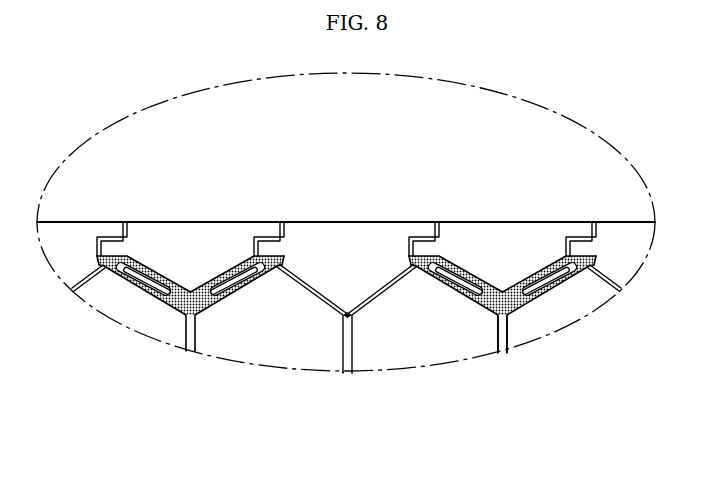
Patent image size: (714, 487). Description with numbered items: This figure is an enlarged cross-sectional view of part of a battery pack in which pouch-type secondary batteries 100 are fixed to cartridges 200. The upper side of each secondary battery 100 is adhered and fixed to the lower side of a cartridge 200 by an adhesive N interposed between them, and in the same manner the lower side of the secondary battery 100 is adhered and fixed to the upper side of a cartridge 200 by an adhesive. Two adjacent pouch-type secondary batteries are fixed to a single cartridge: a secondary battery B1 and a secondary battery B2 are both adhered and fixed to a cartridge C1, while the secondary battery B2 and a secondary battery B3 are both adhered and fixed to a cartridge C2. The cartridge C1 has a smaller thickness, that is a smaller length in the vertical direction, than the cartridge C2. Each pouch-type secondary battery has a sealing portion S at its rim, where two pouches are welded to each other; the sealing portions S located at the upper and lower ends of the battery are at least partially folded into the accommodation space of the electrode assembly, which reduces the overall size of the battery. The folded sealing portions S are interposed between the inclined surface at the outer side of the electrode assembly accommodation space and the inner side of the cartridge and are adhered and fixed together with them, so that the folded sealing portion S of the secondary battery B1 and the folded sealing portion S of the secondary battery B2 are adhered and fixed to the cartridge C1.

The cartridge 200 is at (458, 182).
The cartridge C2 is at (362, 232).
The cartridge C1 is at (460, 232).
The pouch-type secondary battery 100 is at (533, 410).
The secondary battery B3 is at (299, 353).
The secondary battery B2 is at (429, 353).
The secondary battery B1 is at (527, 336).
The adhesive N is at (495, 314).
The sealing portion S is at (150, 288).